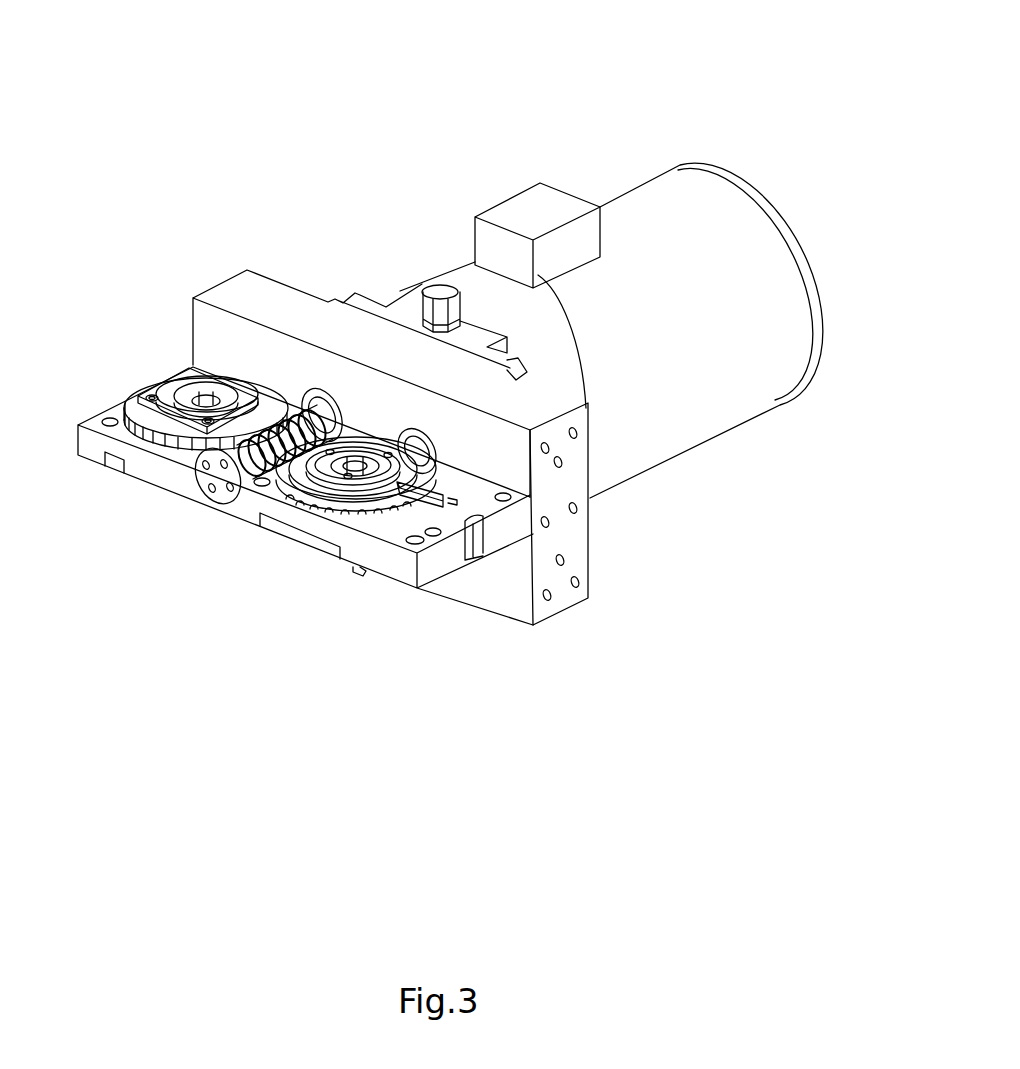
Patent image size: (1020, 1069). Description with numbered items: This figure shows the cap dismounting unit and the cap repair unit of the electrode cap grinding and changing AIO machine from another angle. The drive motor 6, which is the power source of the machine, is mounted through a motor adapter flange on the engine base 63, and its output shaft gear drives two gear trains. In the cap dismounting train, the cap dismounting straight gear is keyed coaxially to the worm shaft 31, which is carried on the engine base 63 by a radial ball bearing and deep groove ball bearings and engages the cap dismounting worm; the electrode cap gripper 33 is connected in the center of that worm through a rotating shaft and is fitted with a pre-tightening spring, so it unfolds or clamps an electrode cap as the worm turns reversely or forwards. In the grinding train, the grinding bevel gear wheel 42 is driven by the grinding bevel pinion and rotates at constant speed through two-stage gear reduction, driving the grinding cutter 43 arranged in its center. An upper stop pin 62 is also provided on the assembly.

The drive motor 6 is at (612, 290).
The upper stop pin 62 is at (424, 290).
The engine base 63 is at (282, 303).
The electrode cap gripper 33 is at (180, 386).
The worm shaft 31 is at (230, 467).
The grinding bevel gear wheel 42 is at (289, 512).
The grinding cutter 43 is at (349, 488).